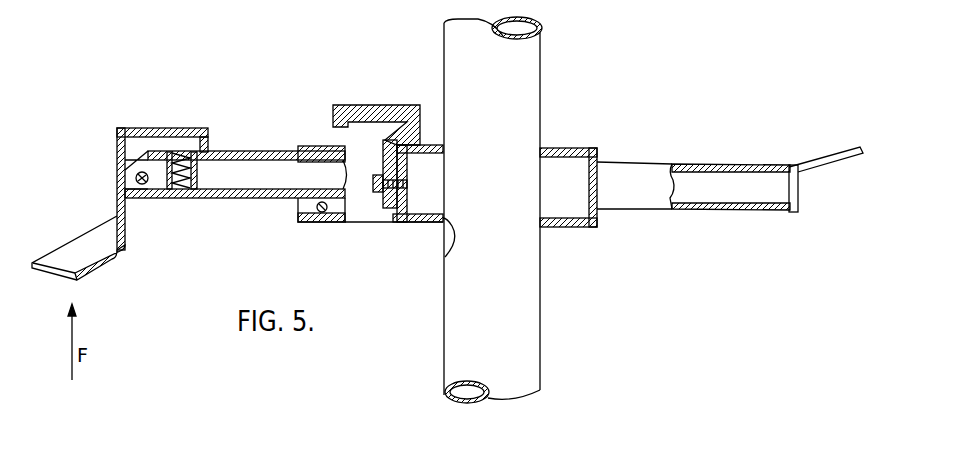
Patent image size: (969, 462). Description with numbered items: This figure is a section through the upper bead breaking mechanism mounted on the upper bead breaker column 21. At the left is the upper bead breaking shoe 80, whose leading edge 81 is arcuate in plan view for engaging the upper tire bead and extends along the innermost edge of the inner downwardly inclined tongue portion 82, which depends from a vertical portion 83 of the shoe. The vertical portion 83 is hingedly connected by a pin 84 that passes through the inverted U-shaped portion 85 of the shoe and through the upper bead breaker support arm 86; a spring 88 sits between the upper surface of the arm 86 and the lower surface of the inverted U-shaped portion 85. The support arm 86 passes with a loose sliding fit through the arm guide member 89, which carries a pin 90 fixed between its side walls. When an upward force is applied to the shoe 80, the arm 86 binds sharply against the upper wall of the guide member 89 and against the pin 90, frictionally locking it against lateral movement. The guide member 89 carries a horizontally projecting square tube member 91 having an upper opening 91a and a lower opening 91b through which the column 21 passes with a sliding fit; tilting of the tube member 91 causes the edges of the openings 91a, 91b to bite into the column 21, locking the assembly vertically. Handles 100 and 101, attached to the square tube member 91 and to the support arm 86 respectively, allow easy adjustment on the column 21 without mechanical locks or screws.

The upper bead breaker column 21 is at (535, 360).
The upper bead breaking shoe 80 is at (134, 164).
The leading edge 81 is at (50, 277).
The inner downwardly inclined tongue portion 82 is at (105, 266).
The vertical portion 83 is at (117, 188).
The pin 84 is at (148, 184).
The inverted U-shaped portion 85 is at (147, 128).
The upper bead breaker support arm 86 is at (266, 152).
The spring 88 is at (200, 137).
The arm guide member 89 is at (310, 147).
The pin 90 is at (323, 214).
The square tube member 91 is at (420, 224).
The upper opening 91a is at (540, 148).
The lower opening 91b is at (445, 257).
The handle 100 is at (370, 105).
The handle 101 is at (818, 153).